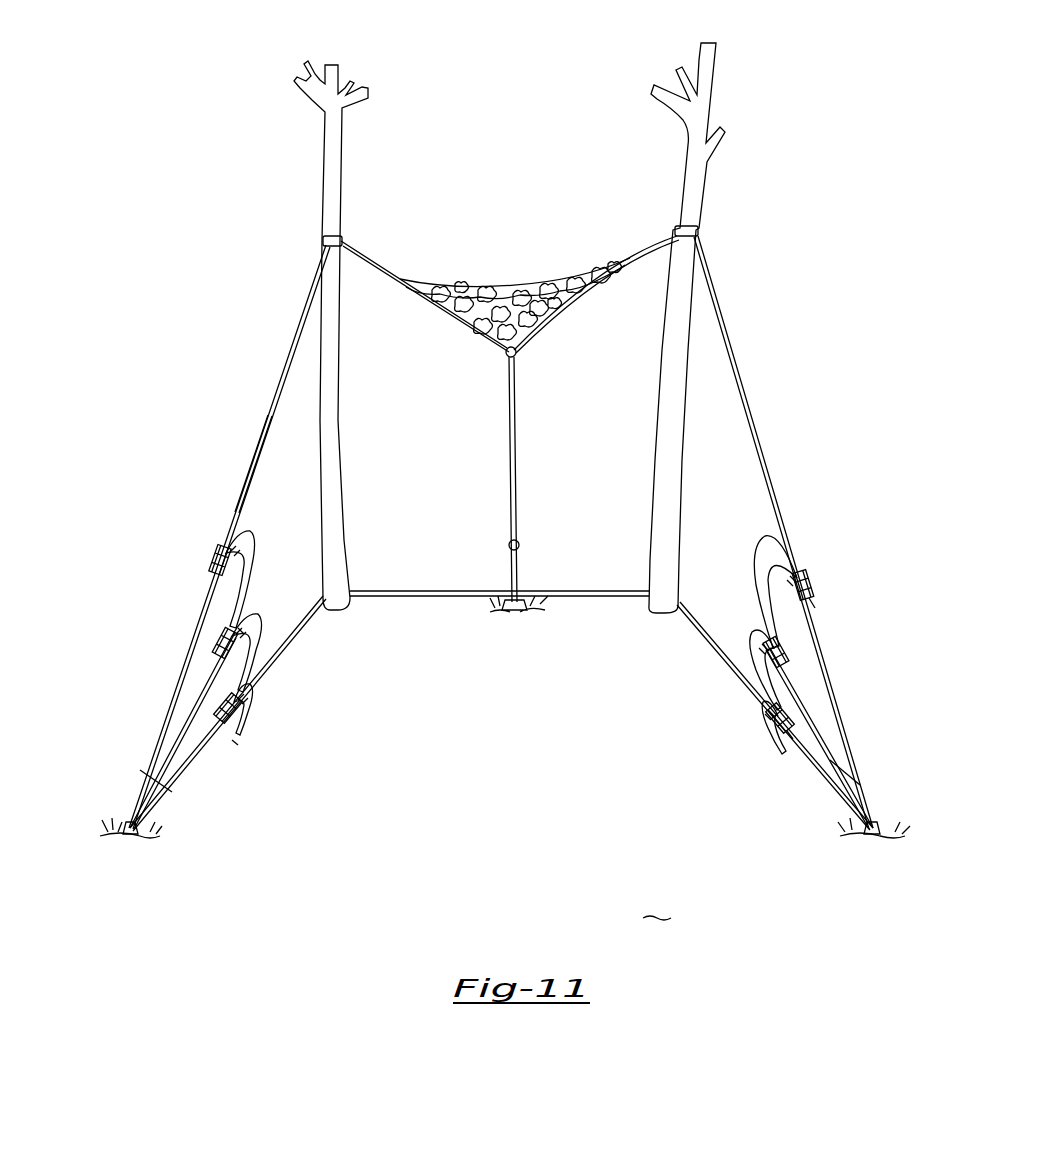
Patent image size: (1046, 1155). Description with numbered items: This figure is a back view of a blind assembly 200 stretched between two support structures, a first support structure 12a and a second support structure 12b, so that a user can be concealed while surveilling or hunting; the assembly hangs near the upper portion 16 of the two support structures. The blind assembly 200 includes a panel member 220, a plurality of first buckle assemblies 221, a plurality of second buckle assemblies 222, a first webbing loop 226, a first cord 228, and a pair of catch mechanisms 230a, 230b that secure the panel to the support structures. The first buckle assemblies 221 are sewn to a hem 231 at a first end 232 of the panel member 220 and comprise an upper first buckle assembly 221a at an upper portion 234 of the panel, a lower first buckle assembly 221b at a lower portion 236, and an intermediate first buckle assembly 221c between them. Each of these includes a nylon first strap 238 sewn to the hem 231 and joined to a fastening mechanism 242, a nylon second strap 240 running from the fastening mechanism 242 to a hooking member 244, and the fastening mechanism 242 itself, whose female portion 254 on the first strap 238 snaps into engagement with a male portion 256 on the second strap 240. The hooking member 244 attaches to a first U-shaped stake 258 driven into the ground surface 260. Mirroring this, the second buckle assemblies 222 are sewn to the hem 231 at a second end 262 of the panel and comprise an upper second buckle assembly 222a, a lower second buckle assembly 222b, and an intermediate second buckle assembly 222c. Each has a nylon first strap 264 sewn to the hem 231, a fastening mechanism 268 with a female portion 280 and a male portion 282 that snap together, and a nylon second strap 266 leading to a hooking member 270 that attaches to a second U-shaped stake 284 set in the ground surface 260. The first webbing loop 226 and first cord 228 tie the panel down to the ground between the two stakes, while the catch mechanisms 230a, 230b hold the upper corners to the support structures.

The first support structure 12a is at (745, 78).
The second support structure 12b is at (380, 60).
The upper portion 16 is at (569, 306).
The blind assembly 200 is at (503, 240).
The panel member 220 is at (794, 533).
The first buckle assemblies 221 is at (794, 533).
The upper first buckle assembly 221a is at (808, 532).
The lower first buckle assembly 221b is at (805, 755).
The intermediate first buckle assembly 221c is at (810, 680).
The second buckle assemblies 222 is at (218, 538).
The upper second buckle assembly 222a is at (202, 537).
The lower second buckle assembly 222b is at (195, 770).
The intermediate second buckle assembly 222c is at (197, 678).
The first webbing loop 226 is at (505, 355).
The first cord 228 is at (540, 430).
The catch mechanism 230a is at (700, 232).
The catch mechanism 230b is at (327, 237).
The hem 231 is at (282, 372).
The first end 232 is at (765, 440).
The upper portion 234 is at (362, 300).
The lower portion 236 is at (283, 617).
The first strap 238 is at (790, 580).
The second strap 240 is at (860, 785).
The fastening mechanism 242 is at (790, 590).
The hooking member 244 is at (880, 822).
The female portion 254 is at (811, 582).
The male portion 256 is at (812, 634).
The first U-shaped stake 258 is at (860, 832).
The ground surface 260 is at (662, 904).
The second end 262 is at (235, 500).
The first strap 264 is at (222, 548).
The second strap 266 is at (172, 792).
The fastening mechanism 268 is at (242, 630).
The hooking member 270 is at (125, 820).
The female portion 280 is at (237, 548).
The male portion 282 is at (212, 565).
The second U-shaped stake 284 is at (142, 832).